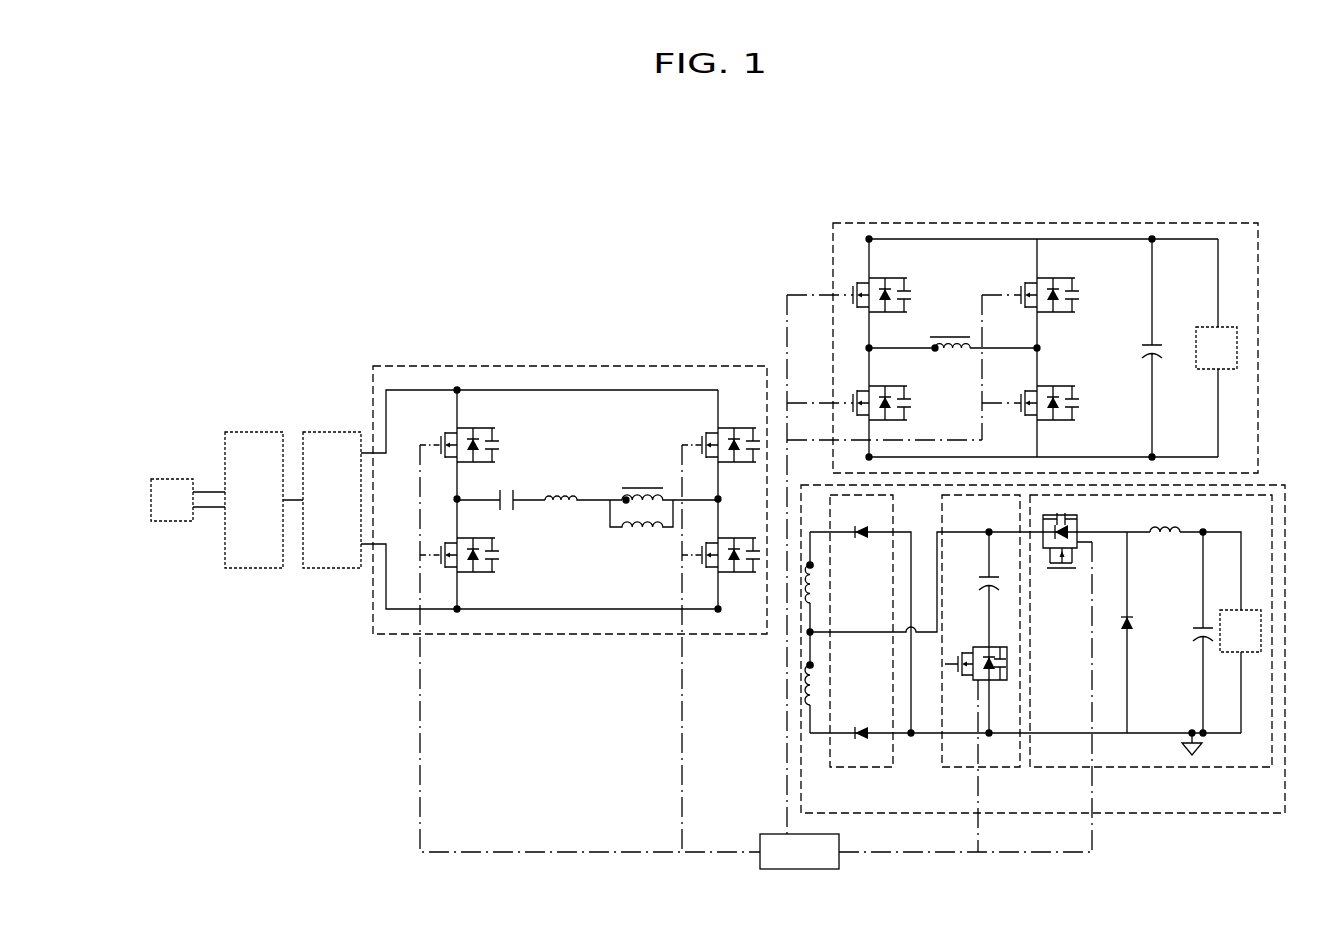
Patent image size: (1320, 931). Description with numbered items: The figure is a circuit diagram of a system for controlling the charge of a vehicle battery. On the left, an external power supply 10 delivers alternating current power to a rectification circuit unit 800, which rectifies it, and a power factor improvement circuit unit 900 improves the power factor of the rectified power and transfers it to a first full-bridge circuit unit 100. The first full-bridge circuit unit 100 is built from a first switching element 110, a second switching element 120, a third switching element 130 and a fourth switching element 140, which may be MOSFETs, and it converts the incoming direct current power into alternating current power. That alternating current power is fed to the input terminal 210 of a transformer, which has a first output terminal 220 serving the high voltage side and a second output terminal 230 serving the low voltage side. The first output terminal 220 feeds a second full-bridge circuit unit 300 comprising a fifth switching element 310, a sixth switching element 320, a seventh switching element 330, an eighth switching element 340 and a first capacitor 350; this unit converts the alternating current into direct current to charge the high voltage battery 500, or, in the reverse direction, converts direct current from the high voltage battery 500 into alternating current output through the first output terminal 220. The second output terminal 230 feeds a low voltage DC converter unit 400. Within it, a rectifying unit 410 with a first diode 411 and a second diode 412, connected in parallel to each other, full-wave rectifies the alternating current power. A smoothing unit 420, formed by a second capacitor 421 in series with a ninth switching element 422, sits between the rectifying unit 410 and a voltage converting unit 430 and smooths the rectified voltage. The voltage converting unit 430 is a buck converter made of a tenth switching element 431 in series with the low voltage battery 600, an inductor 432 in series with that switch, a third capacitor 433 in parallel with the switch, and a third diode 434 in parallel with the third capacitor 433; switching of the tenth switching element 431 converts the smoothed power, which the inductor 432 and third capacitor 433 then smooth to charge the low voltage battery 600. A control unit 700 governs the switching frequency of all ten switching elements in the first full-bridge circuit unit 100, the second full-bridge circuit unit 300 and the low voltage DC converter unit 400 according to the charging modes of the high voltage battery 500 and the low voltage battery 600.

The external power supply 10 is at (172, 500).
The rectification circuit unit 800 is at (254, 500).
The power factor improvement circuit unit 900 is at (332, 500).
The first full-bridge circuit unit 100 is at (522, 366).
The first switching element 110 is at (492, 429).
The second switching element 120 is at (706, 573).
The third switching element 130 is at (492, 570).
The fourth switching element 140 is at (699, 438).
The input terminal 210 is at (629, 488).
The first output terminal 220 is at (948, 337).
The second output terminal 230 is at (815, 600).
The second full-bridge circuit unit 300 is at (833, 255).
The fifth switching element 310 is at (903, 281).
The sixth switching element 320 is at (1071, 391).
The seventh switching element 330 is at (903, 391).
The eighth switching element 340 is at (1071, 281).
The first capacitor 350 is at (1158, 345).
The high voltage battery 500 is at (1216, 348).
The low voltage DC converter unit 400 is at (1208, 813).
The rectifying unit 410 is at (873, 767).
The first diode 411 is at (862, 727).
The second diode 412 is at (862, 538).
The smoothing unit 420 is at (953, 767).
The second capacitor 421 is at (983, 577).
The ninth switching element 422 is at (985, 647).
The voltage converting unit 430 is at (1152, 767).
The tenth switching element 431 is at (1058, 575).
The inductor 432 is at (1165, 536).
The third capacitor 433 is at (1196, 628).
The third diode 434 is at (1127, 631).
The low voltage battery 600 is at (1240, 631).
The control unit 700 is at (756, 657).